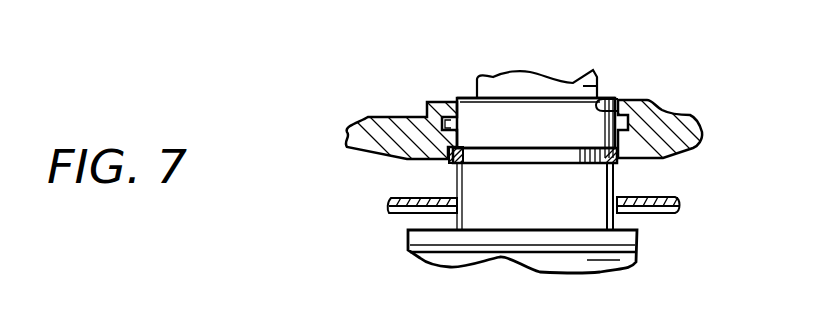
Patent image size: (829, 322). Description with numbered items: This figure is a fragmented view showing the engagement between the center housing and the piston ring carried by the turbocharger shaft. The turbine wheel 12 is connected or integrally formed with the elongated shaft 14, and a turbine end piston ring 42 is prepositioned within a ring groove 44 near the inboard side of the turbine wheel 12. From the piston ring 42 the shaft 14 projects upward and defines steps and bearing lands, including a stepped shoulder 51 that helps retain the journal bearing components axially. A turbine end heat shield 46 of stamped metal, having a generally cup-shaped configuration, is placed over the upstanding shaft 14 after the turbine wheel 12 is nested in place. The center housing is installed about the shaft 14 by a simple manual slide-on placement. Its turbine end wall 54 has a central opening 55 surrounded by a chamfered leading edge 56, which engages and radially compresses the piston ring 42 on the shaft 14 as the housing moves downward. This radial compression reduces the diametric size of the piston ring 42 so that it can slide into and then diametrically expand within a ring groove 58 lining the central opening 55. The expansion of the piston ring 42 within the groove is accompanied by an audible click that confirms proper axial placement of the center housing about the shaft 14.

The turbine wheel 12 is at (567, 258).
The shaft 14 is at (594, 88).
The turbine end piston ring 42 is at (455, 160).
The ring groove 44 is at (496, 151).
The turbine end heat shield 46 is at (660, 214).
The stepped shoulder 51 is at (467, 97).
The turbine end wall 54 is at (363, 119).
The central opening 55 is at (606, 99).
The chamfered leading edge 56 is at (610, 172).
The ring groove 58 is at (413, 118).